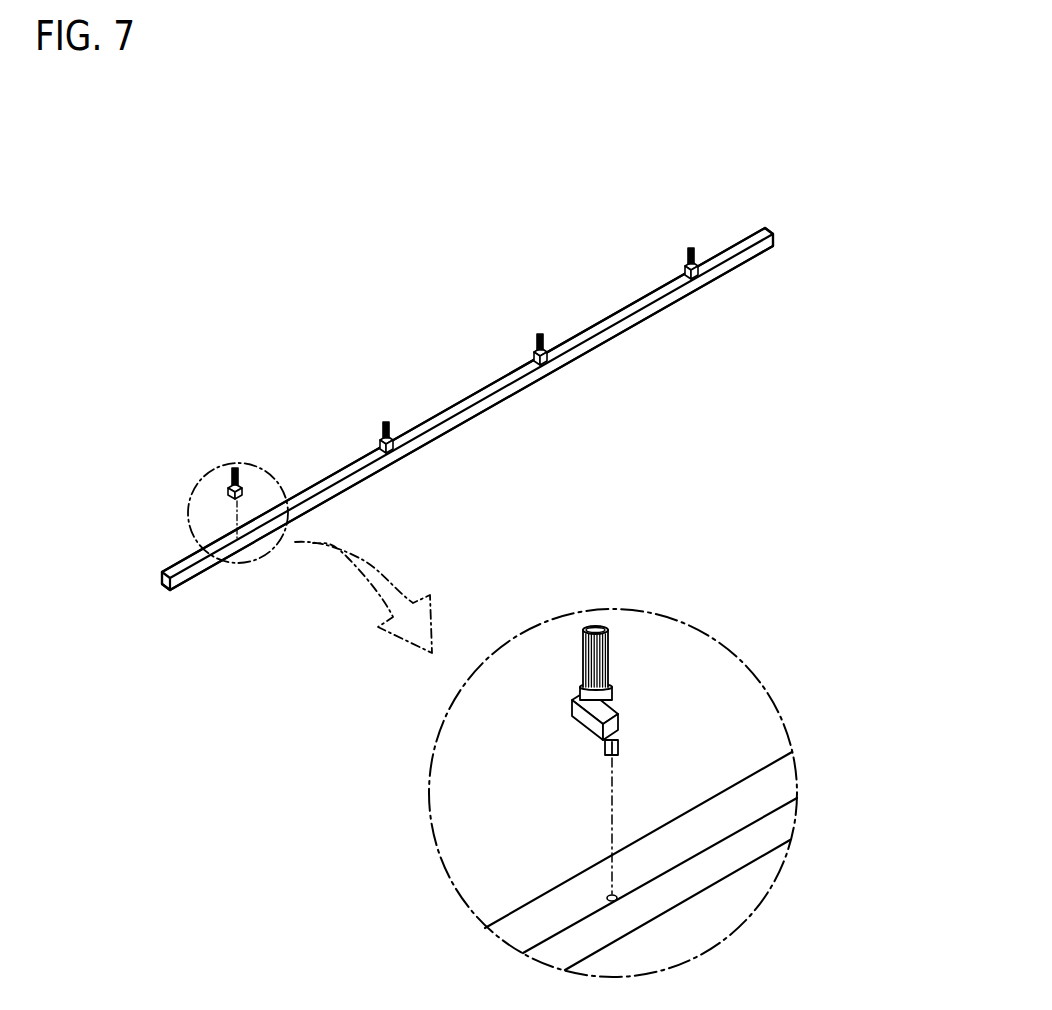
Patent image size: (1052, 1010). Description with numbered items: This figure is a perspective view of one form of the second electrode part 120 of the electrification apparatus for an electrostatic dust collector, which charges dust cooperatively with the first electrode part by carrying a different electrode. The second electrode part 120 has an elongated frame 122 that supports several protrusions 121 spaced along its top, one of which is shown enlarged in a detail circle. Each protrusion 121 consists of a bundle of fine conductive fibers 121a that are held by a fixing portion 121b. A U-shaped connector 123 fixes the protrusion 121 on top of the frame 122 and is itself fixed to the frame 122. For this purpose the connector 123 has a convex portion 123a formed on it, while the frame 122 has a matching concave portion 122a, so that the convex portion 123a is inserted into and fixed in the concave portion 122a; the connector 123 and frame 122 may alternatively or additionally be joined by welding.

The second electrode part 120 is at (406, 254).
The protrusion 121 is at (867, 598).
The fine conductive fibers 121a is at (609, 652).
The fixing portion 121b is at (613, 695).
The frame 122 is at (707, 822).
The concave portion 122a is at (618, 900).
The connector 123 is at (592, 724).
The convex portion 123a is at (604, 754).